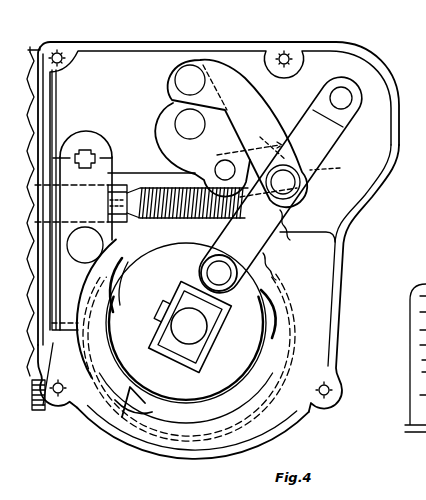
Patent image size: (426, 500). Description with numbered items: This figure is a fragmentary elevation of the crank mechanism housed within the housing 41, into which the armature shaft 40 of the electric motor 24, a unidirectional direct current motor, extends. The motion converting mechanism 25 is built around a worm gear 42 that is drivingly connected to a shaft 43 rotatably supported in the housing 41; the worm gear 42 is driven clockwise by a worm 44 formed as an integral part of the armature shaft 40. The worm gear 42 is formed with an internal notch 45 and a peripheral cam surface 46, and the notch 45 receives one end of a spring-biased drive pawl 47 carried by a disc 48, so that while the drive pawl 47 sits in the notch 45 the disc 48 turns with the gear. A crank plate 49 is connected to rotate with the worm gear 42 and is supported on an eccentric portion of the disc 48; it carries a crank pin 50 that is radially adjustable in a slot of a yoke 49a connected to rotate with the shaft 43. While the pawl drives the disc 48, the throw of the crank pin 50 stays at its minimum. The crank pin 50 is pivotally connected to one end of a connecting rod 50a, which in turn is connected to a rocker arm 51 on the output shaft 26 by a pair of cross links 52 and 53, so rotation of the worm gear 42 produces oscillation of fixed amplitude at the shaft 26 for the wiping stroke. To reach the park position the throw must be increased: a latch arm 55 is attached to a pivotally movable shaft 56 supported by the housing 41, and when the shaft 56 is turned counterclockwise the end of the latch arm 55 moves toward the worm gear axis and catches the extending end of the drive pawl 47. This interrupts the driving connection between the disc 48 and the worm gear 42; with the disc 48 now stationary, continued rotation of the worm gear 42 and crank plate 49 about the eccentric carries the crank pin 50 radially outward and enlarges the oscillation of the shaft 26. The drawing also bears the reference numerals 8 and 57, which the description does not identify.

The section line 8- 8 is at (55, 168).
The electric motor 24 is at (43, 43).
The motion converting mechanism 25 is at (228, 70).
The output shaft 26 is at (200, 124).
The armature shaft 40 is at (120, 187).
The housing 41 is at (398, 98).
The worm gear 42 is at (296, 337).
The shaft 43 is at (198, 331).
The worm 44 is at (214, 204).
The internal notch 45 is at (127, 261).
The peripheral cam surface 46 is at (124, 264).
The drive pawl 47 is at (127, 405).
The disc 48 is at (250, 385).
The crank plate 49 is at (178, 405).
The yoke 49a is at (187, 403).
The crank pin 50 is at (228, 290).
The connecting rod 50a is at (299, 245).
The rocker arm 51 is at (166, 98).
The cross link 52 is at (272, 110).
The cross link 53 is at (309, 158).
The latch arm 55 is at (44, 405).
The pivotally movable shaft 56 is at (86, 148).
The cover flange 57 is at (112, 65).